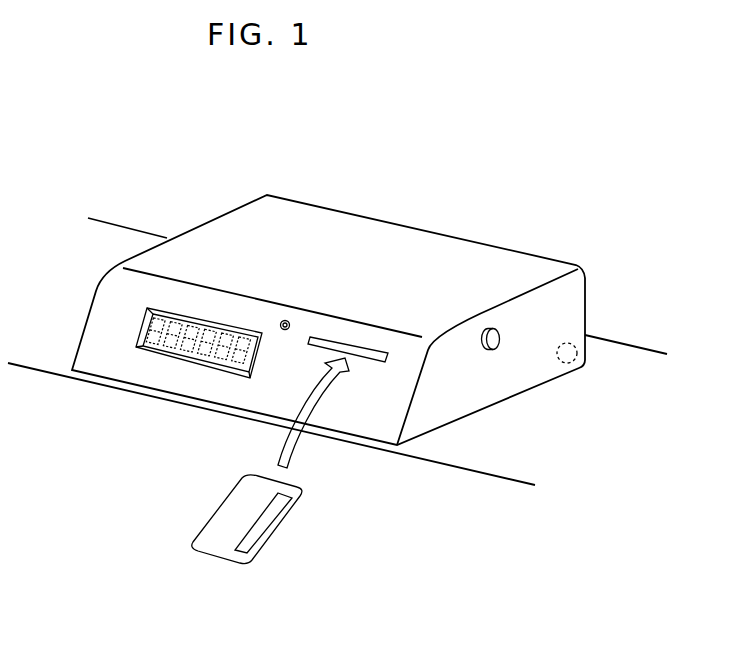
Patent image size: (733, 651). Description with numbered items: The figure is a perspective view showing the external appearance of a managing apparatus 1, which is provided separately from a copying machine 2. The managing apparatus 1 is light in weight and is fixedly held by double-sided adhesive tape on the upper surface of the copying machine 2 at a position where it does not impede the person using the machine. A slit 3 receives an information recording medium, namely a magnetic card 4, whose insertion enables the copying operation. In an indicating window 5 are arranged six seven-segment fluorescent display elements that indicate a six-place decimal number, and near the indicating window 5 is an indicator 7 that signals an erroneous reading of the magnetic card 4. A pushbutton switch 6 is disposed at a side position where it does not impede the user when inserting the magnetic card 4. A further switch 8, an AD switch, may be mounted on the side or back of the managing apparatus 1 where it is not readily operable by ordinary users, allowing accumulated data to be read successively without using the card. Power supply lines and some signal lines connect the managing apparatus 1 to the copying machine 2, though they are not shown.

The managing apparatus 1 is at (538, 262).
The copying machine 2 is at (617, 348).
The slit 3 is at (337, 340).
The magnetic card 4 is at (298, 500).
The indicating window 5 is at (205, 317).
The pushbutton switch 6 is at (500, 333).
The indicator 7 is at (289, 320).
The switch 8 is at (577, 367).